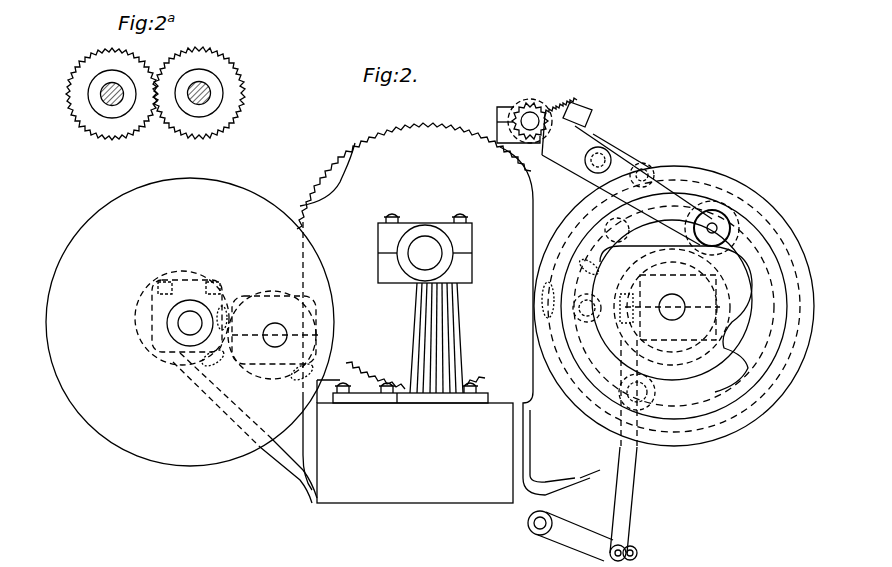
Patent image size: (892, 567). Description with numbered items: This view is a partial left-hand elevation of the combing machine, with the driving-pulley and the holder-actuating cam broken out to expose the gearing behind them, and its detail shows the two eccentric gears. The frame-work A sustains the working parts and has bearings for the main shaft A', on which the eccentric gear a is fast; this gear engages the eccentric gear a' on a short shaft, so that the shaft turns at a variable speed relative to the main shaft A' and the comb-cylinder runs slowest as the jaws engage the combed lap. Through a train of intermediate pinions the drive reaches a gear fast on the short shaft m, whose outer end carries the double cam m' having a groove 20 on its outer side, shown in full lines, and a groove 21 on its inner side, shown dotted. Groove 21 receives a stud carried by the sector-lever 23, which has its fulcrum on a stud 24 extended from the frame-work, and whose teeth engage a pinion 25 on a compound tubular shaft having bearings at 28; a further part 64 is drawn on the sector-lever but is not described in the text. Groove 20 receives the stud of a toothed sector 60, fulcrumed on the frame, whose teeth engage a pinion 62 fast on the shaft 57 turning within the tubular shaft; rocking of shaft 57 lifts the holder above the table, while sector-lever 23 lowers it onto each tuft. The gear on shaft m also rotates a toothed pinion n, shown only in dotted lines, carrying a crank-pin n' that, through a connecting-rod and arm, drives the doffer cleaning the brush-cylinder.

In FIG. 2A, the eccentric gear a is at (106, 94).
In FIG. 2A, the eccentric gear a' is at (199, 88).
In FIG. 2A, the main shaft A' is at (83, 107).
In FIG. 2, the main shaft A' is at (128, 370).
In FIG. 2, the frame-work A is at (425, 325).
In FIG. 2, the bearings 28 is at (497, 132).
In FIG. 2, the shaft 57 is at (516, 110).
In FIG. 2, the pinion 62 is at (530, 103).
In FIG. 2, the pinion 25 is at (556, 106).
In FIG. 2, the toothed sector 60 is at (583, 112).
In FIG. 2, the sector-lever 23 is at (597, 124).
In FIG. 2, the pin 64 is at (604, 157).
In FIG. 2, the stud 24 is at (646, 172).
In FIG. 2, the cam-groove 20 is at (733, 383).
In FIG. 2, the cam-groove 21 is at (768, 366).
In FIG. 2, the short shaft m is at (672, 307).
In FIG. 2, the double cam m' is at (679, 332).
In FIG. 2, the toothed pinion n is at (661, 402).
In FIG. 2, the crank-pin n' is at (573, 444).